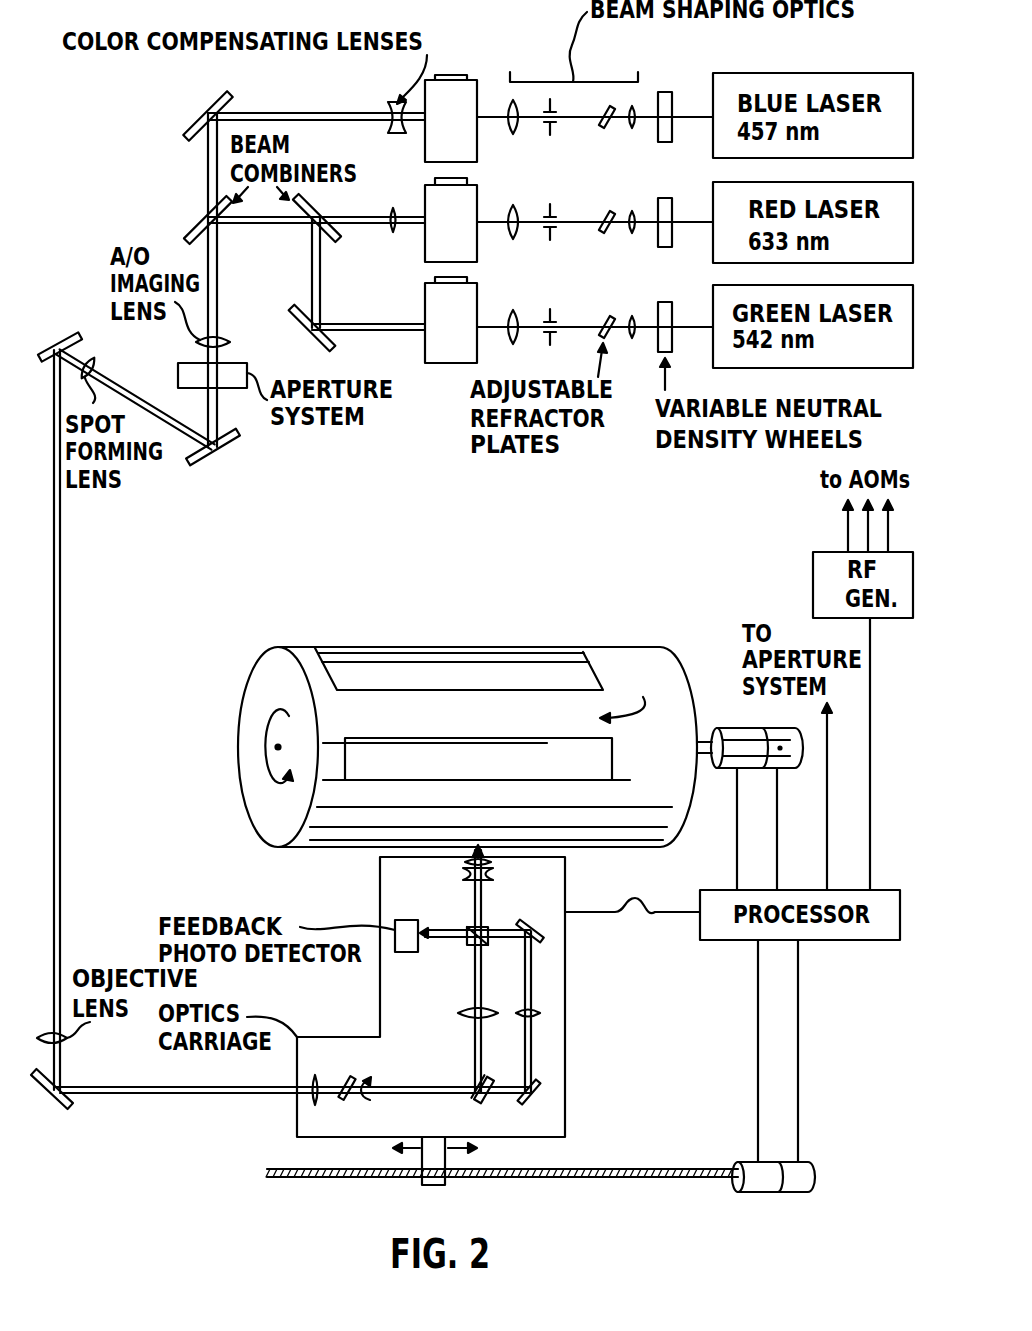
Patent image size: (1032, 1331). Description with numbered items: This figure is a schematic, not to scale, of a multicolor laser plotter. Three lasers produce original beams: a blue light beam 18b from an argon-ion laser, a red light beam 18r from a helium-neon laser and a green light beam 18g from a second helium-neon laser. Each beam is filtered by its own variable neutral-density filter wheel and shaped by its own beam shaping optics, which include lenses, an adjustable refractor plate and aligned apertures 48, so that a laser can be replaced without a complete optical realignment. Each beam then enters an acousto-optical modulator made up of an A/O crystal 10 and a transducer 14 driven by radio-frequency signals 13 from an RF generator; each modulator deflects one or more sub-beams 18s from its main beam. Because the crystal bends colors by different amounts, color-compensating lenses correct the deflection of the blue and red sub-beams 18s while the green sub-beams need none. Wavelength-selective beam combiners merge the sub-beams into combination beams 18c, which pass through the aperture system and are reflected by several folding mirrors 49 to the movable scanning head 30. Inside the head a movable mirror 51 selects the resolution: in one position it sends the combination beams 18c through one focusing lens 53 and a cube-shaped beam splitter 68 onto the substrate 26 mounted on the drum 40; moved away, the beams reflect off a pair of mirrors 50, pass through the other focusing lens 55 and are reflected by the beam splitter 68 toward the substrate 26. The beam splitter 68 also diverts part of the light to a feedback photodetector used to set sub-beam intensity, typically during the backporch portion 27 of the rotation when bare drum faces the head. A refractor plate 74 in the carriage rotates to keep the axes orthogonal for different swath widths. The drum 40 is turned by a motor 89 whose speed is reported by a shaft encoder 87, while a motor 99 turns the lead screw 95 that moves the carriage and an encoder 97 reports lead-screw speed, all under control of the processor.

The A/O crystal 10 is at (477, 137).
The RF drive signal 13 is at (888, 533).
The transducer 14 is at (452, 75).
The blue light beam 18b is at (693, 115).
The red light beam 18r is at (687, 222).
The green light beam 18g is at (687, 325).
The sub-beams 18s is at (280, 112).
The combination beams 18c is at (222, 270).
The substrate 26 is at (592, 773).
The backporch portion 27 is at (643, 697).
The scanning head 30 is at (380, 860).
The drum 40 is at (272, 676).
The apertures 48 is at (552, 128).
The folding mirrors 49 is at (243, 437).
The mirrors 50 is at (546, 914).
The movable mirror 51 is at (475, 1093).
The focusing lens 53 is at (457, 1013).
The focusing lens 55 is at (540, 1013).
The beam splitter 68 is at (486, 927).
The refractor plate 74 is at (358, 1073).
The shaft encoder 87 is at (783, 768).
The motor 89 is at (728, 768).
The lead screw 95 is at (597, 1173).
The shaft encoder 97 is at (807, 1160).
The motor 99 is at (738, 1158).